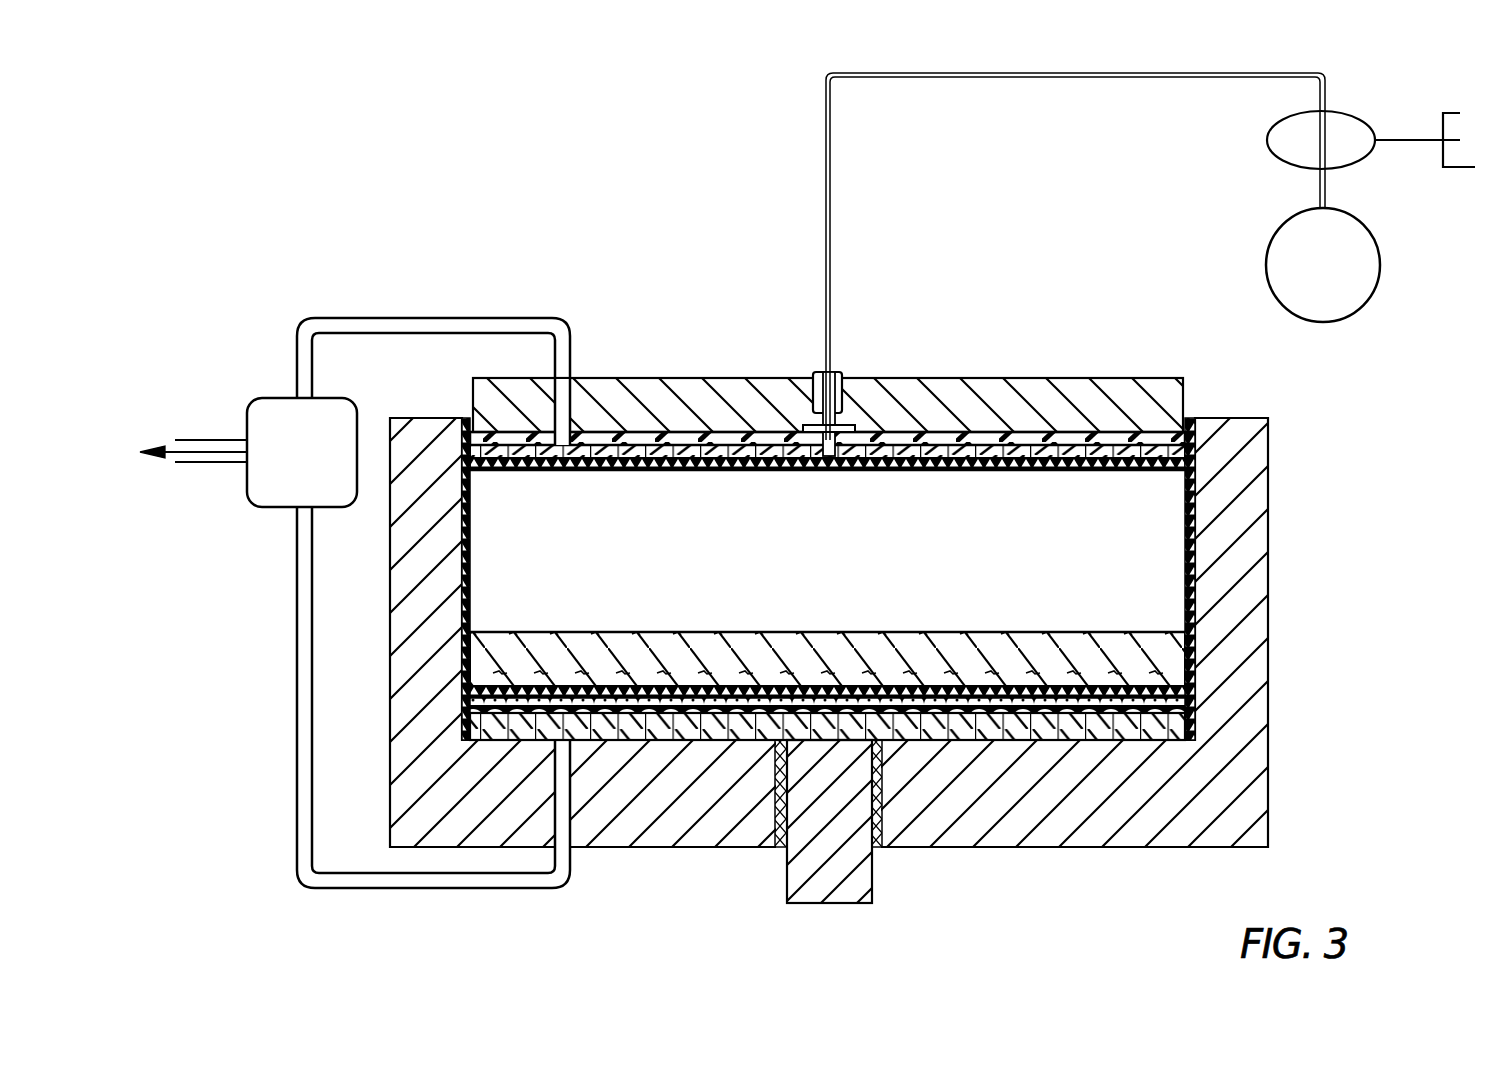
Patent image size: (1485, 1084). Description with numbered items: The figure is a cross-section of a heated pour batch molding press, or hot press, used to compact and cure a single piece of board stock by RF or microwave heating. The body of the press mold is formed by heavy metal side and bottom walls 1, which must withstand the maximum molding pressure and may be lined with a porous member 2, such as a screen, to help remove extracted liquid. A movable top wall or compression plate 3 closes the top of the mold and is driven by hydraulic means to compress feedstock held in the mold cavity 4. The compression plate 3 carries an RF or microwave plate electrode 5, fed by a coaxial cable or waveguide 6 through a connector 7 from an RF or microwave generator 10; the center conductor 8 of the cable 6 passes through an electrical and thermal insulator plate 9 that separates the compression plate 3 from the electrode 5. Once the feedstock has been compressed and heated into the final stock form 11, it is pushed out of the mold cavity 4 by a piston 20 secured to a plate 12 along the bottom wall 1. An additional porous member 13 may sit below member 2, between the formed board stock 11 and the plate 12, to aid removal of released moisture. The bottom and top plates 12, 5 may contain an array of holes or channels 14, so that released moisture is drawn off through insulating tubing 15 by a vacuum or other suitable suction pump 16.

The side and bottom walls 1 is at (400, 583).
The porous member 2 is at (470, 546).
The compression plate 3 is at (988, 385).
The mold cavity 4 is at (752, 530).
The plate electrode 5 is at (1043, 468).
The coaxial cable or waveguide 6 is at (830, 220).
The connector 7 is at (856, 426).
The center conductor 8 is at (842, 400).
The insulator plate 9 is at (1135, 438).
The RF or microwave generator 10 is at (1380, 277).
The final stock form 11 is at (727, 632).
The plate 12 is at (775, 800).
The additional porous member 13 is at (1060, 705).
The array of holes or channels 14 is at (600, 432).
The insulating tubing 15 is at (485, 318).
The suction pump 16 is at (278, 398).
The piston 20 is at (873, 887).